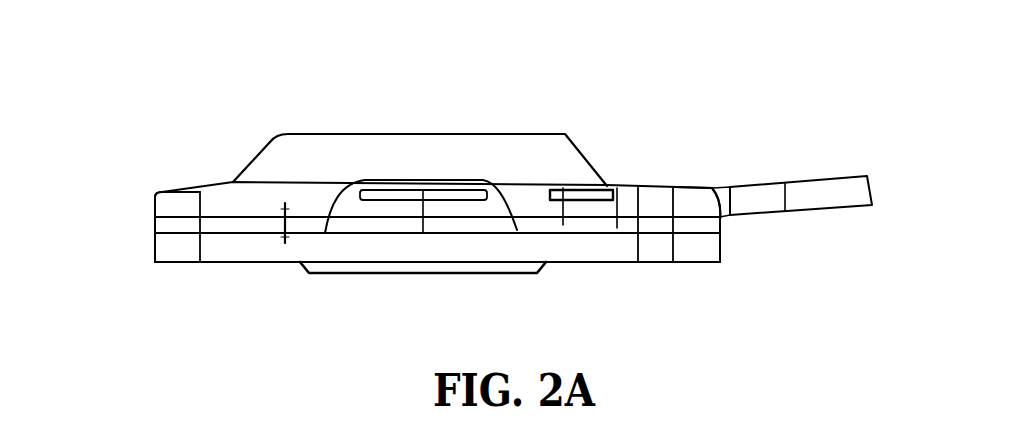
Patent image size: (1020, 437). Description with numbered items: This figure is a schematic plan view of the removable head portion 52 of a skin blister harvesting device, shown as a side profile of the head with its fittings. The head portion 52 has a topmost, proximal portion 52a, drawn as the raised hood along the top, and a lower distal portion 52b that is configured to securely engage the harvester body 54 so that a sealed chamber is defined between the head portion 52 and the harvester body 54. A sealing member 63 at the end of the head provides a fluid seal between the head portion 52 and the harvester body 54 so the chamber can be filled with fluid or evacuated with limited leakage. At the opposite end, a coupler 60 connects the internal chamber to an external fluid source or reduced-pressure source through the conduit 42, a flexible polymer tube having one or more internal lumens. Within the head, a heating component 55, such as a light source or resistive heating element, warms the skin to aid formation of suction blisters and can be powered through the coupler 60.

The head portion 52 is at (482, 97).
The proximal portion 52a is at (328, 130).
The distal portion 52b is at (727, 228).
The harvester body 54 is at (710, 255).
The heating component 55 is at (594, 180).
The coupler 60 is at (703, 177).
The conduit 42 is at (752, 177).
The sealing member 63 is at (150, 233).